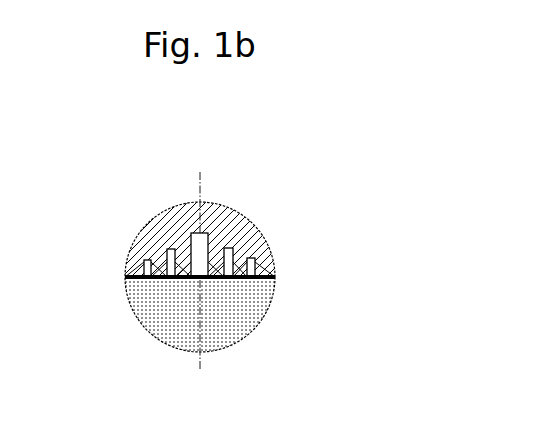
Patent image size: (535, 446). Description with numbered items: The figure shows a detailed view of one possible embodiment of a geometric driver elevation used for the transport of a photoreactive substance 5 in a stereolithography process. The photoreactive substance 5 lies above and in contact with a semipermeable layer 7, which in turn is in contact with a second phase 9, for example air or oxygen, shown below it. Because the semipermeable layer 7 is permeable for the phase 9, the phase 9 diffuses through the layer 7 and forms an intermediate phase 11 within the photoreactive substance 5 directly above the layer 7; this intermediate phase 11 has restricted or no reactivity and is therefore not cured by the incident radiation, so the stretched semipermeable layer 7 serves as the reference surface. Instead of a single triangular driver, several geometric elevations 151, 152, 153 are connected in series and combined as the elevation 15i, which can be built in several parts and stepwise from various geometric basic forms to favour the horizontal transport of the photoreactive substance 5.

The photoreactive substance 5 is at (145, 233).
The semipermeable layer 7 is at (243, 279).
The second phase 9 is at (158, 298).
The intermediate phase 11 is at (127, 278).
The geometric elevation 151 is at (207, 252).
The geometric elevation 152 is at (229, 261).
The geometric elevation 153 is at (250, 265).
The combined geometric elevations 15i is at (285, 223).